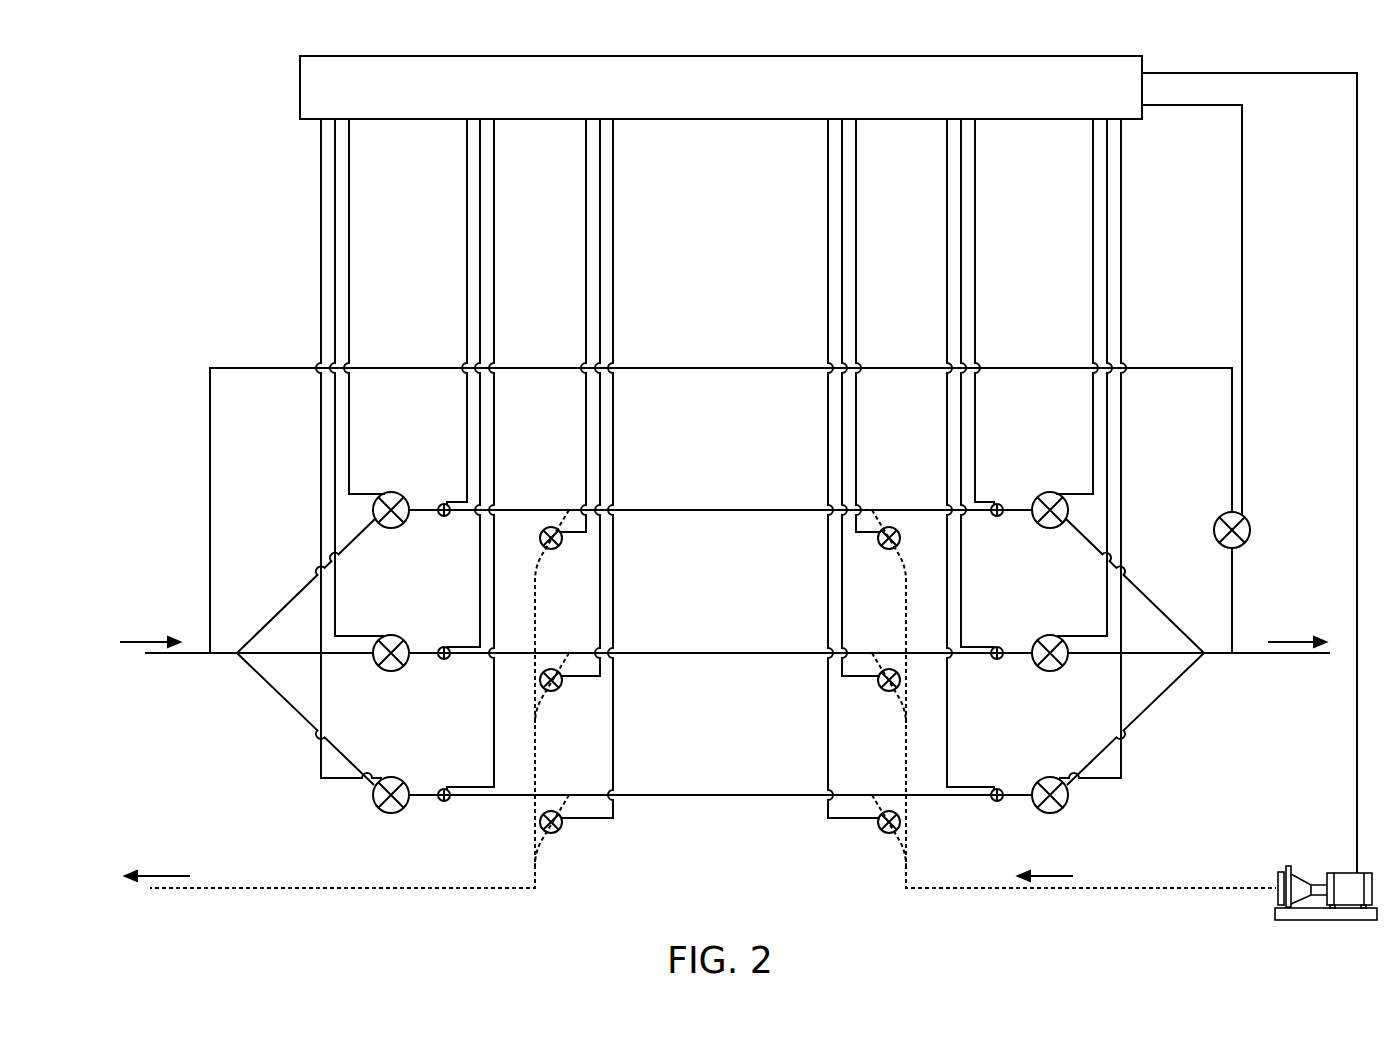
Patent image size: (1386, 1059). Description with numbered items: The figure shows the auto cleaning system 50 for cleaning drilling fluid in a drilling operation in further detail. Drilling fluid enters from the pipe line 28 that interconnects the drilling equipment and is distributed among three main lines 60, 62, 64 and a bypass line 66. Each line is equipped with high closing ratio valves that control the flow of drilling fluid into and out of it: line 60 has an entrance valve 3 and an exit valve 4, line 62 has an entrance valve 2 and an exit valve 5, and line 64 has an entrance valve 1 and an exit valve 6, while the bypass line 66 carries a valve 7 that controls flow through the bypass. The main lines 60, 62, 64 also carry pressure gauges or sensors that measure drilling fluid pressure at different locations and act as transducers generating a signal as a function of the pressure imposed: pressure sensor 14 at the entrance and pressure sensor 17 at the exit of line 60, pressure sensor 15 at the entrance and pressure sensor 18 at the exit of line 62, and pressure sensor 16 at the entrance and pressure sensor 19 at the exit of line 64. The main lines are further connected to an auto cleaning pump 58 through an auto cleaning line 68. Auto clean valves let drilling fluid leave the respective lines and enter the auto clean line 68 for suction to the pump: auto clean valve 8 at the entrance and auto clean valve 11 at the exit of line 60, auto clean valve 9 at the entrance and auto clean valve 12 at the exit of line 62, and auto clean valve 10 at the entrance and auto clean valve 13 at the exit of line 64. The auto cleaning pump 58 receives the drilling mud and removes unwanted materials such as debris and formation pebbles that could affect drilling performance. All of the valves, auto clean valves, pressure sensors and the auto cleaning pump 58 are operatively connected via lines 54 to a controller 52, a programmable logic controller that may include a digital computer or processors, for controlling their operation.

The entrance valve 1 is at (391, 781).
The entrance valve 2 is at (391, 639).
The entrance valve 3 is at (391, 495).
The exit valve 4 is at (1050, 495).
The exit valve 5 is at (1050, 639).
The exit valve 6 is at (1050, 781).
The valve 7 is at (1225, 519).
The auto clean valve 8 is at (557, 552).
The auto clean valve 9 is at (557, 694).
The auto clean valve 10 is at (560, 836).
The auto clean valve 11 is at (882, 551).
The auto clean valve 12 is at (882, 693).
The auto clean valve 13 is at (882, 836).
The pressure sensor 14 is at (445, 493).
The pressure sensor 15 is at (445, 637).
The pressure sensor 16 is at (445, 779).
The pressure sensor 17 is at (998, 493).
The pressure sensor 18 is at (998, 637).
The pressure sensor 19 is at (998, 779).
The pipe line 28 is at (149, 640).
The auto cleaning system 50 is at (221, 112).
The controller 52 is at (672, 119).
The lines 54 is at (352, 250).
The auto cleaning pump 58 is at (1343, 868).
The main line 60 is at (632, 510).
The main line 62 is at (632, 653).
The main line 64 is at (632, 795).
The bypass line 66 is at (632, 368).
The auto cleaning line 68 is at (1120, 888).